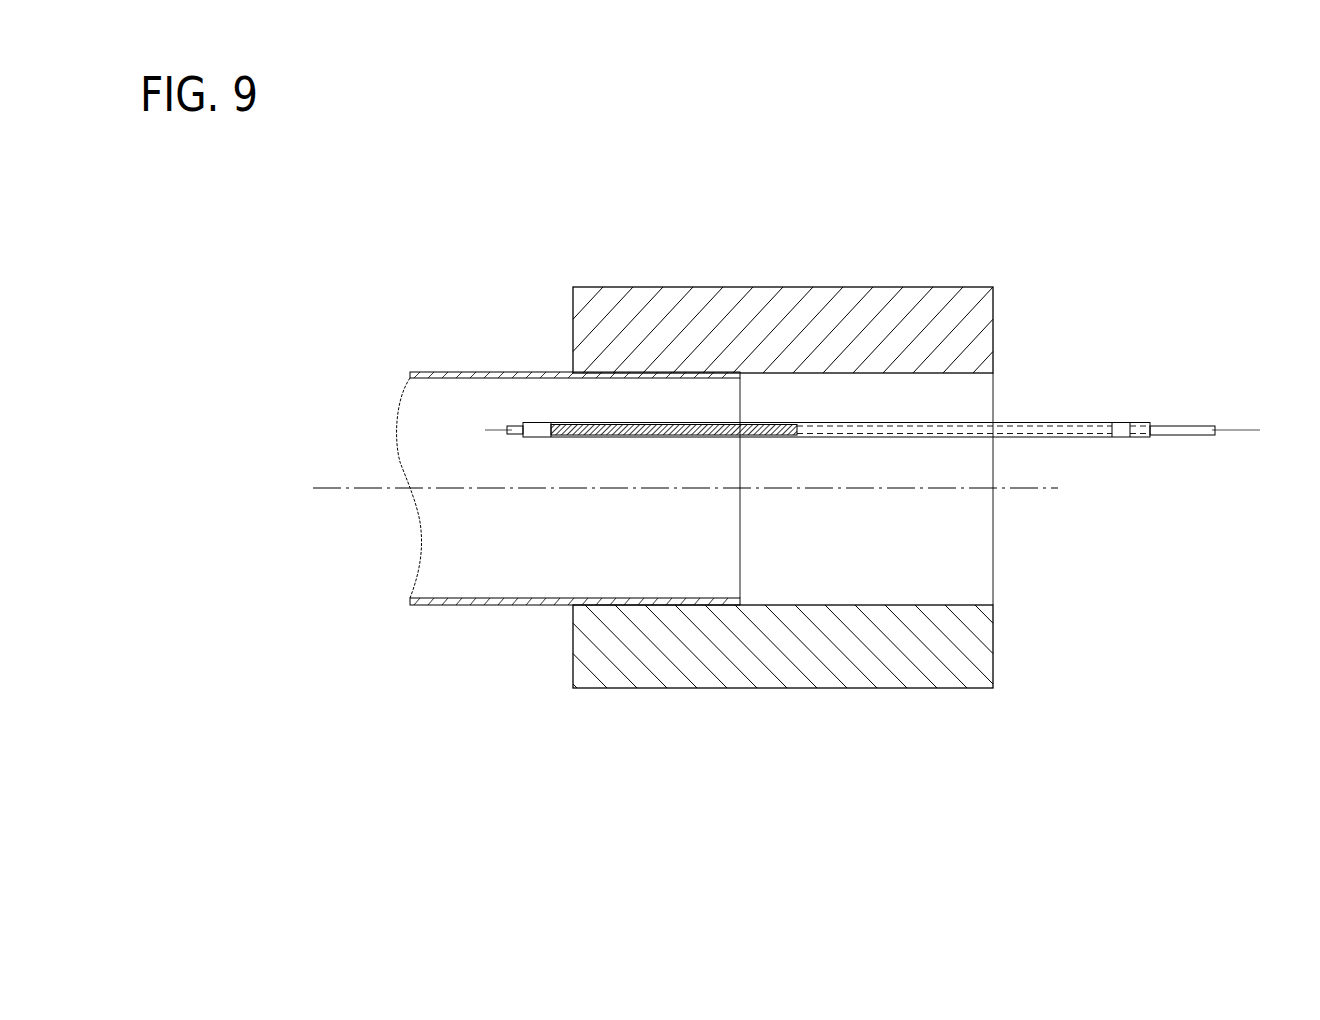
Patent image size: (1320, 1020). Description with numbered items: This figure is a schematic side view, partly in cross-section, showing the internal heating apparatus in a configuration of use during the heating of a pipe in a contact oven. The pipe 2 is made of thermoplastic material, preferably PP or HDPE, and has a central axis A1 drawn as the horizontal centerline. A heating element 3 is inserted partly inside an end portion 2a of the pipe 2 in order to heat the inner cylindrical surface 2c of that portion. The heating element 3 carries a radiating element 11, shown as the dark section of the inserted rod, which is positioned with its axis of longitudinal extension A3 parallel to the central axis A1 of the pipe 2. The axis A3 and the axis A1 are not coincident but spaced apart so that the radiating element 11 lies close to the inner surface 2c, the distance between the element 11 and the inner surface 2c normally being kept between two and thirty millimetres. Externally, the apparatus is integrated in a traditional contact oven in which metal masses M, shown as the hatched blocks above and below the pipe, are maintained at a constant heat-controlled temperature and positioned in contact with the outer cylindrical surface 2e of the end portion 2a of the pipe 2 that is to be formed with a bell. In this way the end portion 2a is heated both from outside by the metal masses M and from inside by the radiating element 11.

The pipe 2 is at (591, 526).
The end portion 2a is at (552, 619).
The outer cylindrical surface 2e is at (632, 608).
The inner cylindrical surface 2c is at (664, 596).
The heating element 3 is at (872, 396).
The radiating element 11 is at (575, 419).
The metal masses M is at (940, 330).
The central axis A1 is at (1020, 490).
The axis of longitudinal extension A3 is at (493, 428).